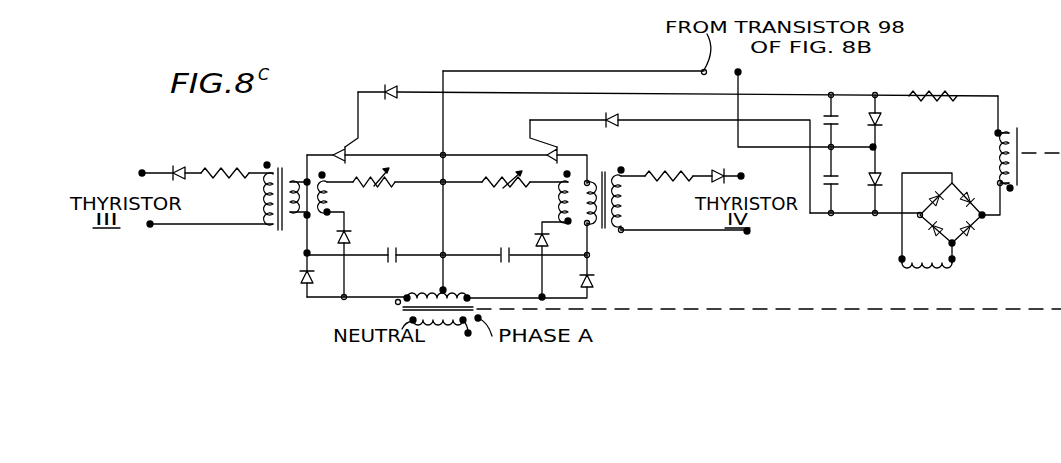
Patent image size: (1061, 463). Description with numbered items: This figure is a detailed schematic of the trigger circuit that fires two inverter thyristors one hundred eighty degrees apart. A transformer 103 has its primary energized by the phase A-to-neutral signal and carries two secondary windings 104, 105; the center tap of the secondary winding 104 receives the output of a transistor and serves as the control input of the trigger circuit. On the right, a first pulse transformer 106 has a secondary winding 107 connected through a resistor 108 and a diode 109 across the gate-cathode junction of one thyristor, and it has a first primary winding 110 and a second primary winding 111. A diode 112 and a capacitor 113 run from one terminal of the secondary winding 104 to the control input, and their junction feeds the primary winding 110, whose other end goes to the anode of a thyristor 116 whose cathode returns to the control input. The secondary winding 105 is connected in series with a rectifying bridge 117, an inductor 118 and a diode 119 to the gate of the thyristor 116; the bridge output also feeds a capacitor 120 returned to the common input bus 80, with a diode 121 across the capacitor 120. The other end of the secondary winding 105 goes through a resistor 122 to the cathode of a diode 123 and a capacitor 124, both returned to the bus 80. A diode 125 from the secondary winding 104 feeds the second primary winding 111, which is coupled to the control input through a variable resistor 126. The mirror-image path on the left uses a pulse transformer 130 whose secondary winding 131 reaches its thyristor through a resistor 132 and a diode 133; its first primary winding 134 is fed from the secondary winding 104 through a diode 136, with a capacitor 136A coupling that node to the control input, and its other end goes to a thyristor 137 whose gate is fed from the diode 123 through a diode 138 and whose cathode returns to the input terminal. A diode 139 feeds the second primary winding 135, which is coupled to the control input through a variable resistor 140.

The common input bus 80 is at (741, 73).
The transformer 103 is at (401, 307).
The secondary winding 104 is at (467, 293).
The secondary winding 105 is at (1006, 133).
The first pulse transformer 106 is at (605, 170).
The secondary winding 107 is at (625, 195).
The resistor 108 is at (669, 171).
The diode 109 is at (718, 170).
The first primary winding 110 is at (590, 232).
The second primary winding 111 is at (569, 213).
The diode 112 is at (592, 282).
The capacitor 113 is at (512, 262).
The thyristor 116 is at (558, 147).
The rectifying bridge 117 is at (948, 223).
The inductor 118 is at (941, 268).
The diode 119 is at (612, 112).
The capacitor 120 is at (822, 179).
The diode 121 is at (880, 177).
The resistor 122 is at (947, 91).
The diode 123 is at (880, 112).
The capacitor 124 is at (833, 113).
The diode 125 is at (533, 241).
The variable resistor 126 is at (497, 190).
The pulse transformer 130 is at (284, 167).
The secondary winding 131 is at (262, 227).
The resistor 132 is at (235, 167).
The diode 133 is at (177, 166).
The first primary winding 134 is at (294, 224).
The second primary winding 135 is at (329, 193).
The diode 136 is at (303, 290).
The capacitor 136A is at (395, 262).
The thyristor 137 is at (338, 146).
The diode 138 is at (392, 85).
The diode 139 is at (350, 233).
The variable resistor 140 is at (385, 186).